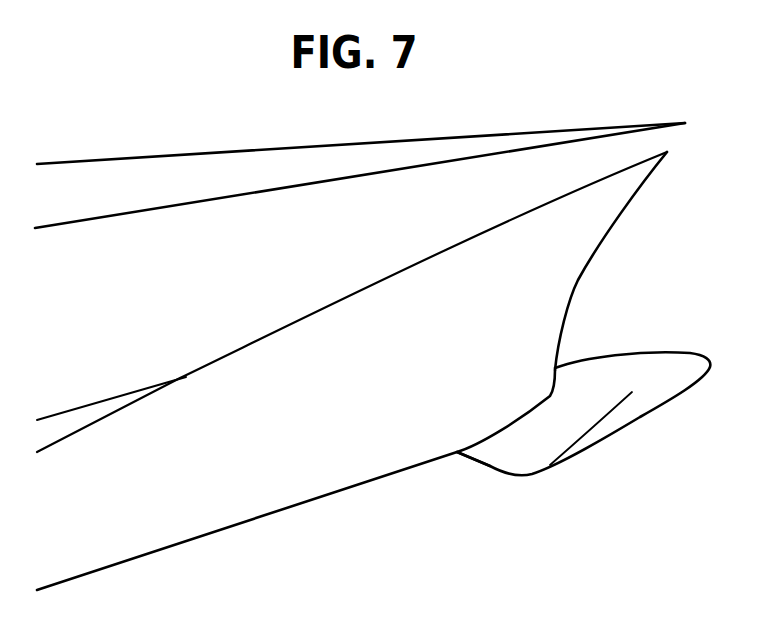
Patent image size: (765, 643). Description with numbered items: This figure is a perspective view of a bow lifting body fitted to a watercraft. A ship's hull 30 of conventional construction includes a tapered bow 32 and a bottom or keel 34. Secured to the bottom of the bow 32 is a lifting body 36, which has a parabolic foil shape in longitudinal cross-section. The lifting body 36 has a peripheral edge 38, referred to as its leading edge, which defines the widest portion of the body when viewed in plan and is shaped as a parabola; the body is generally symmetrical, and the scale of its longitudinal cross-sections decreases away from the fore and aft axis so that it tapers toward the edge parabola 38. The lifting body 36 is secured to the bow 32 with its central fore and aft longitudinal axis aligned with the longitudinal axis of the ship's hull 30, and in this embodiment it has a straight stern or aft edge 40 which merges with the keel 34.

The ship's hull 30 is at (468, 182).
The tapered bow 32 is at (622, 217).
The keel 34 is at (118, 565).
The lifting body 36 is at (640, 352).
The peripheral edge 38 is at (607, 447).
The aft edge 40 is at (483, 462).